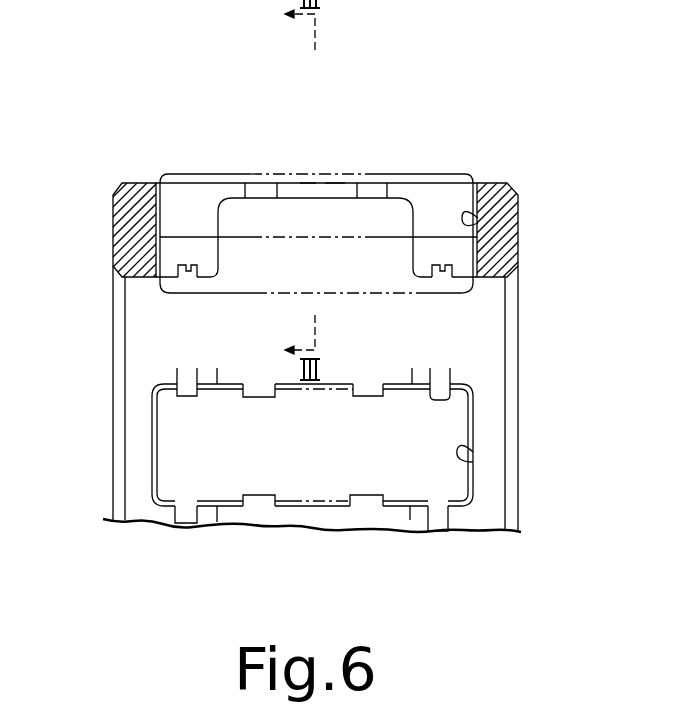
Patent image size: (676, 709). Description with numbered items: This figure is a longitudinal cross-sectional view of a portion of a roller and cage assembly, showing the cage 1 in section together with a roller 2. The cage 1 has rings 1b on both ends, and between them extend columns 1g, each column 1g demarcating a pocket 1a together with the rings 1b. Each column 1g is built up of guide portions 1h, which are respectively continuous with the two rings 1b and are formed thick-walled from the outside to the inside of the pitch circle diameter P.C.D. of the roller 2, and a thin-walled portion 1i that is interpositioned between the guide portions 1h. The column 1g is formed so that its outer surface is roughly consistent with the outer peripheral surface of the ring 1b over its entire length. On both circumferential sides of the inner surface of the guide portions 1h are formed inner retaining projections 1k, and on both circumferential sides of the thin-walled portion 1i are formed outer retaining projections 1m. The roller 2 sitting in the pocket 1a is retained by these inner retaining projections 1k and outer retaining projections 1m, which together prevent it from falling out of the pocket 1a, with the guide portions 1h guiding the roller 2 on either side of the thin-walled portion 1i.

The cage 1 is at (105, 235).
The pocket 1a is at (478, 220).
The ring 1b is at (120, 198).
The column 1g is at (308, 172).
The guide portion 1h is at (180, 212).
The thin-walled portion 1i is at (333, 190).
The inner retaining projection 1k is at (190, 277).
The outer retaining projection 1m is at (262, 190).
The roller 2 is at (212, 173).
The pitch circle diameter P.C.D. is at (343, 238).